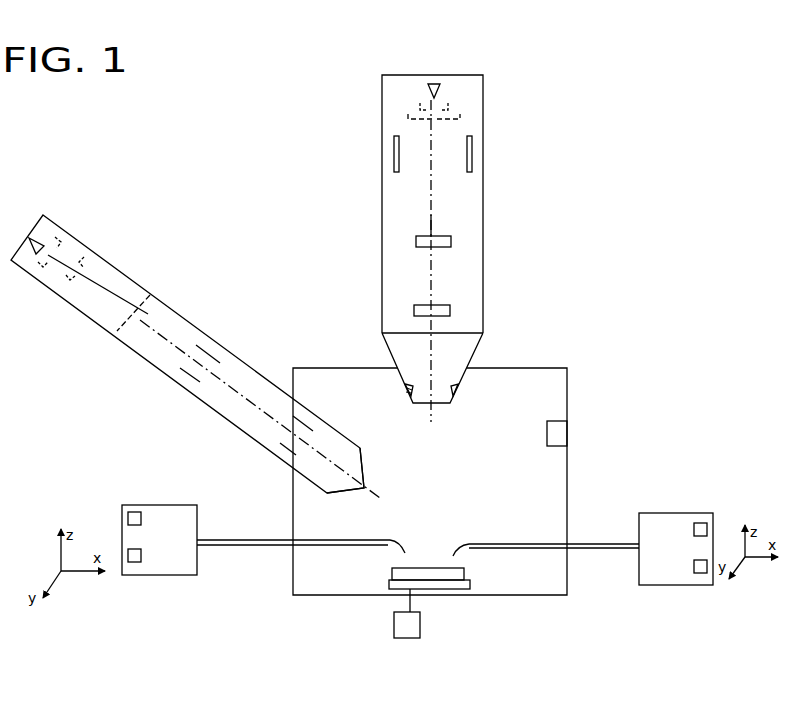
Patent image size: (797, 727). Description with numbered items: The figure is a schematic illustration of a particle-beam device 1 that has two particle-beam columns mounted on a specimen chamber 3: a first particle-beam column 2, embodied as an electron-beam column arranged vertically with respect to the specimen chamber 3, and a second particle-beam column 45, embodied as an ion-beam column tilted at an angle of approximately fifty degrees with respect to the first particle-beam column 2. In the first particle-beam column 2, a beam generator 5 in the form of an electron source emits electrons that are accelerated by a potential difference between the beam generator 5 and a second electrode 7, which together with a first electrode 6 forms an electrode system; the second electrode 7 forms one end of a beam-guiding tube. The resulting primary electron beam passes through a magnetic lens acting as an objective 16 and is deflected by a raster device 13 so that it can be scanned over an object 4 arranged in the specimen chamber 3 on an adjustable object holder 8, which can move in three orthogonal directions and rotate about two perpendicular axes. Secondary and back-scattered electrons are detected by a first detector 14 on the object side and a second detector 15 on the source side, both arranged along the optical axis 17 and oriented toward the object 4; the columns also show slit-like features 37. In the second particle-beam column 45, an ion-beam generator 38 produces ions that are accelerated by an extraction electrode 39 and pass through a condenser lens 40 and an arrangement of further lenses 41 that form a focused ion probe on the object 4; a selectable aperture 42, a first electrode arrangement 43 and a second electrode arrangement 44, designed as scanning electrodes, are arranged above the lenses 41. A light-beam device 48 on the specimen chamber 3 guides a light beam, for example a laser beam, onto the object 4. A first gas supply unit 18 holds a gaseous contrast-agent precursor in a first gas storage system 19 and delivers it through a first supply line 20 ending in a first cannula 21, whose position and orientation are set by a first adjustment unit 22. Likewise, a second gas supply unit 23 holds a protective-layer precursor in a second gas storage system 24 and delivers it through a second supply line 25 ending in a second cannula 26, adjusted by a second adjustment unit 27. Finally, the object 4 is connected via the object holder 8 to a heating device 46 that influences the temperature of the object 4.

The particle-beam device 1 is at (317, 188).
The first particle-beam column 2 is at (620, 135).
The specimen chamber 3 is at (313, 366).
The object 4 is at (432, 580).
The beam generator 5 is at (442, 90).
The first electrode 6 is at (447, 105).
The second electrode 7 is at (462, 118).
The object holder 8 is at (470, 589).
The raster device 13 is at (452, 390).
The first detector 14 is at (451, 311).
The second detector 15 is at (452, 241).
The objective 16 is at (382, 339).
The optical axis 17 is at (436, 216).
The first gas supply unit 18 is at (137, 505).
The first gas storage system 19 is at (128, 517).
The first supply line 20 is at (248, 546).
The first cannula 21 is at (392, 570).
The first adjustment unit 22 is at (137, 562).
The second gas supply unit 23 is at (657, 513).
The second gas storage system 24 is at (700, 523).
The second supply line 25 is at (607, 544).
The second cannula 26 is at (468, 548).
The second adjustment unit 27 is at (700, 573).
The slits 37 is at (475, 155).
The ion-beam generator 38 is at (32, 240).
The extraction electrode 39 is at (63, 236).
The condenser lens 40 is at (85, 258).
The lenses 41 is at (338, 486).
The selectable aperture 42 is at (150, 295).
The first electrode arrangement 43 is at (205, 345).
The second electrode arrangement 44 is at (283, 455).
The second particle-beam column 45 is at (155, 168).
The heating device 46 is at (410, 638).
The light-beam device 48 is at (567, 433).